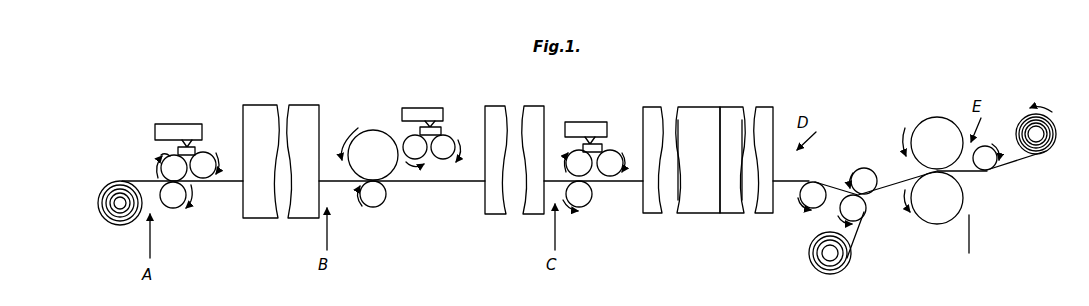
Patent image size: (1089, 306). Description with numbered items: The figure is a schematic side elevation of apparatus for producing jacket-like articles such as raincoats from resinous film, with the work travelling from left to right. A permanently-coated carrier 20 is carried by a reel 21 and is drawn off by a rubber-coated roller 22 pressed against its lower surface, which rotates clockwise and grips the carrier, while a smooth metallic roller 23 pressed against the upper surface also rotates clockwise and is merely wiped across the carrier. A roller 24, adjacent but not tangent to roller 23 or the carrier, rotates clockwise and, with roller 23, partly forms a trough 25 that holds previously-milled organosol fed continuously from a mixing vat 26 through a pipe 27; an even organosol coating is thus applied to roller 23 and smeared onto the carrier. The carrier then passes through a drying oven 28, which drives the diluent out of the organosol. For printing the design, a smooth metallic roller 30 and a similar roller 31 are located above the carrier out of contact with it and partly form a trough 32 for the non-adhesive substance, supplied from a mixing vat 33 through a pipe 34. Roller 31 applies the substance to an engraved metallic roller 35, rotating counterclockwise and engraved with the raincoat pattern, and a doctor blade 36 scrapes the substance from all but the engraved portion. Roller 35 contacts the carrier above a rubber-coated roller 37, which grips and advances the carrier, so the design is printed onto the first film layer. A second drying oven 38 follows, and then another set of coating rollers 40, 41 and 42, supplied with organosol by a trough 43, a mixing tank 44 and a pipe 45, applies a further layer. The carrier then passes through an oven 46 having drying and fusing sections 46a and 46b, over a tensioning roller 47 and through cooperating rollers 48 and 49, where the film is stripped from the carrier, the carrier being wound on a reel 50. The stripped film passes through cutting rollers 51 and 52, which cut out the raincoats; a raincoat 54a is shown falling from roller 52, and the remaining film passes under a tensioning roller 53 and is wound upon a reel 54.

The permanently-coated carrier 20 is at (140, 180).
The reel 21 is at (108, 222).
The rubber-coated roller 22 is at (172, 208).
The roller 23 is at (160, 178).
The roller 24 is at (236, 147).
The trough 25 is at (168, 156).
The mixing vat 26 is at (177, 124).
The pipe 27 is at (196, 146).
The drying oven 28 is at (274, 94).
The smooth metallic roller 30 is at (448, 145).
The roller 31 is at (418, 162).
The trough 32 is at (445, 130).
The mixing vat 33 is at (426, 108).
The pipe 34 is at (404, 128).
The engraved metallic roller 35 is at (360, 128).
The doctor blade 36 is at (382, 127).
The rubber-coated roller 37 is at (370, 207).
The drying oven 38 is at (493, 112).
The coating roller 40 is at (587, 202).
The coating roller 41 is at (570, 158).
The coating roller 42 is at (612, 158).
The trough 43 is at (611, 144).
The mixing tank 44 is at (594, 128).
The pipe 45 is at (586, 139).
The oven 46 is at (718, 105).
The drying section 46a is at (685, 116).
The fusing section 46b is at (733, 116).
The tensioning roller 47 is at (818, 173).
The cooperating roller 48 is at (886, 157).
The cooperating roller 49 is at (860, 213).
The reel 50 is at (812, 260).
The cutting roller 51 is at (940, 104).
The cutting roller 52 is at (932, 216).
The tensioning roller 53 is at (985, 170).
The reel 54 is at (1046, 152).
The raincoat 54a is at (988, 234).